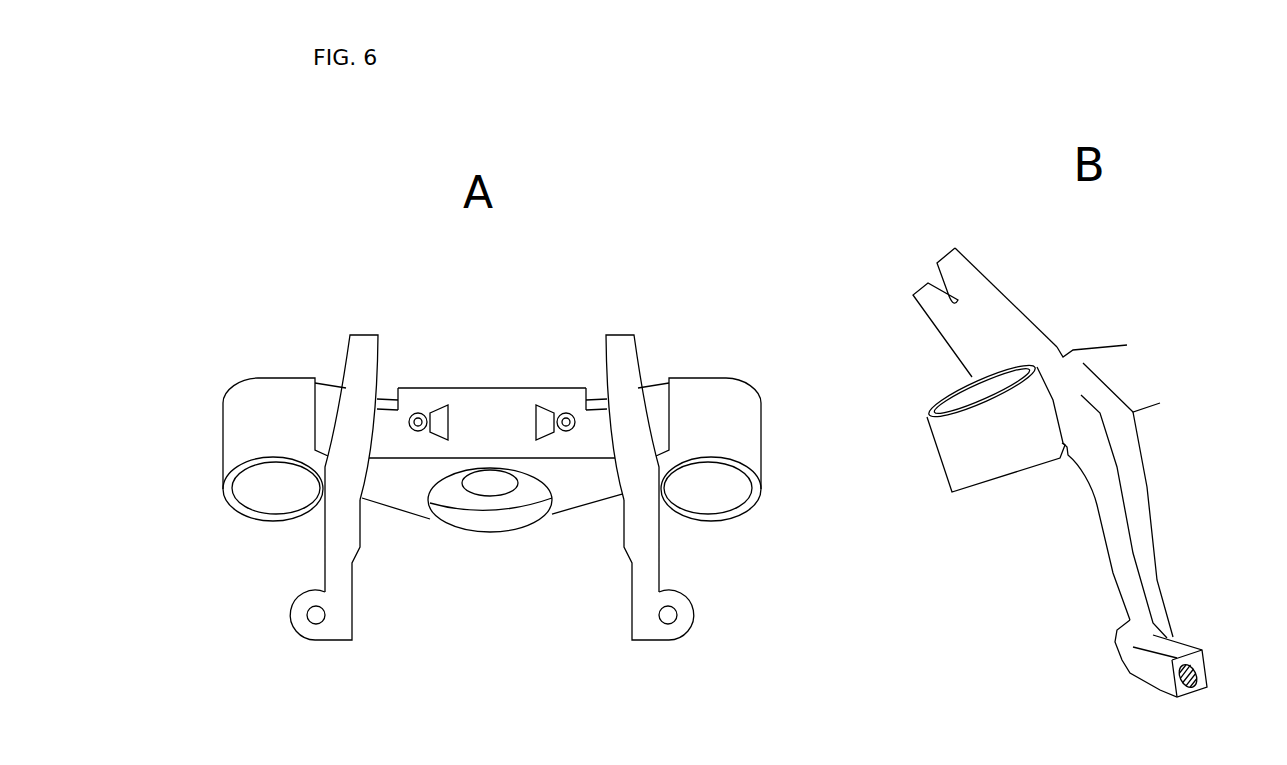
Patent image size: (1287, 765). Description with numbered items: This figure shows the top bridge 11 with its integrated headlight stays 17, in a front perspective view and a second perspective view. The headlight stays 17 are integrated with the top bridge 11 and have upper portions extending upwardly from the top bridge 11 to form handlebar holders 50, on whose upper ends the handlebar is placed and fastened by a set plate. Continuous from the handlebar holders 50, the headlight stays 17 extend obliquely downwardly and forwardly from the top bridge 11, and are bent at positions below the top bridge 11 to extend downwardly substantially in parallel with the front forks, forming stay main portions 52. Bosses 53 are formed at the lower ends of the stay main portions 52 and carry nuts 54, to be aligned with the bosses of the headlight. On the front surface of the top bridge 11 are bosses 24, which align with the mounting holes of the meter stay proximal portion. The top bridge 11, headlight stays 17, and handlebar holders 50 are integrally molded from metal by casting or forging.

The top bridge 11 is at (495, 400).
The headlight stay 17 is at (742, 476).
The boss 24 is at (418, 412).
The handlebar holder 50 is at (357, 373).
The stay main portion 52 is at (342, 575).
The boss 53 is at (298, 613).
The nut 54 is at (317, 627).